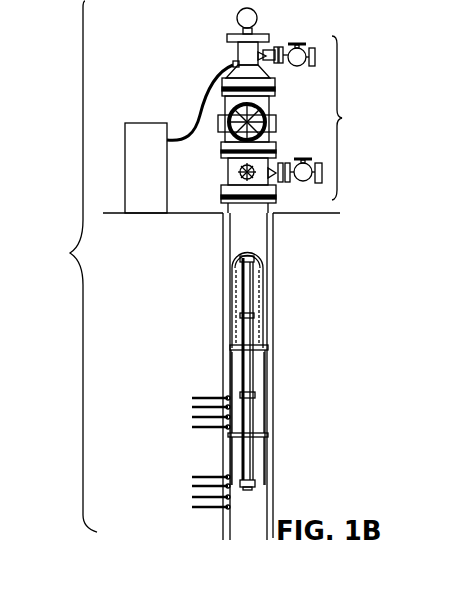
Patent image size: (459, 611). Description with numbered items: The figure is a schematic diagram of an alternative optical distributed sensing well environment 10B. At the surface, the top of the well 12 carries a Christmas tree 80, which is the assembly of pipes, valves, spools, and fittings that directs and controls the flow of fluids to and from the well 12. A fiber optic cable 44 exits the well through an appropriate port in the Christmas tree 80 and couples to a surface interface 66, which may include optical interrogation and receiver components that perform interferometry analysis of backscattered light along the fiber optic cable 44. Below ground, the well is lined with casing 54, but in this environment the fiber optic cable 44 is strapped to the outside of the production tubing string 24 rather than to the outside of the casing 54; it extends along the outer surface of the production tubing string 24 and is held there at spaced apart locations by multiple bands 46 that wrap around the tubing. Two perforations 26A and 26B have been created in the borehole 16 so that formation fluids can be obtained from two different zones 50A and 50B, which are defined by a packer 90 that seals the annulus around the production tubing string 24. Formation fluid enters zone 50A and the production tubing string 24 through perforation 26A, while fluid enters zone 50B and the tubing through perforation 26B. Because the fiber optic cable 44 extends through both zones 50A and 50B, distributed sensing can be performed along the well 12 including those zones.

The optical distributed sensing well environment 10B is at (63, 266).
The well 12 is at (205, 195).
The borehole 16 is at (223, 246).
The production tubing string 24 is at (254, 415).
The perforation 26A is at (186, 392).
The perforation 26B is at (186, 470).
The fiber optic cable 44 is at (205, 112).
The bands 46 is at (256, 262).
The zone 50A is at (233, 363).
The zone 50B is at (233, 455).
The casing 54 is at (268, 253).
The surface interface 66 is at (125, 185).
The Christmas tree 80 is at (292, 105).
The packer 90 is at (263, 439).